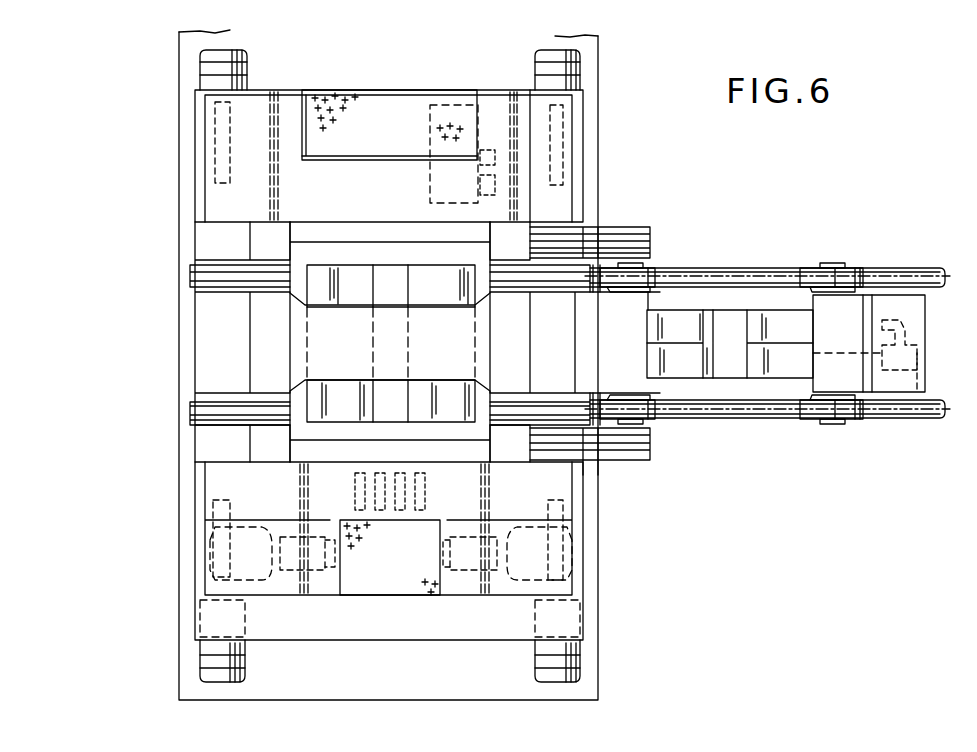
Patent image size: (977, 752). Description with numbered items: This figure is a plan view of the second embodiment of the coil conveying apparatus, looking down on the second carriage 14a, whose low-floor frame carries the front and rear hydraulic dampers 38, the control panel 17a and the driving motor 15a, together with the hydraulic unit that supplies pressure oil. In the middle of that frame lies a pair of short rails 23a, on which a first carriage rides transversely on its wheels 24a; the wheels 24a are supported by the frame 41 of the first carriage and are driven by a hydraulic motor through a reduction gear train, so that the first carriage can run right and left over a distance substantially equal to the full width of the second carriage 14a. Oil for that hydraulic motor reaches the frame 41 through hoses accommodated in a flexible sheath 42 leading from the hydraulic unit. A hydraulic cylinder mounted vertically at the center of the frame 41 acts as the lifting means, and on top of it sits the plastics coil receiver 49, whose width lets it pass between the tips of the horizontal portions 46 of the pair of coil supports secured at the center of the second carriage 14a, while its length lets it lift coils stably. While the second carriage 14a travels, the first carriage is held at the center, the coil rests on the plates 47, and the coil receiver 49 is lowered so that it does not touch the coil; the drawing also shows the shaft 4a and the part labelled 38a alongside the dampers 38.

The second carriage 14a is at (178, 157).
The short rails 23a is at (200, 277).
The horizontal portion 46 is at (340, 230).
The plates 47 is at (420, 270).
The flexible sheath 42 is at (630, 230).
The coil receiver 49 is at (765, 312).
The wheels 24a is at (848, 277).
The shaft 4a is at (922, 262).
The frame 41 is at (915, 310).
The driving motor 15a is at (235, 549).
The control panel 17a is at (370, 583).
The stud 38a is at (245, 660).
The hydraulic dampers 38 is at (535, 660).